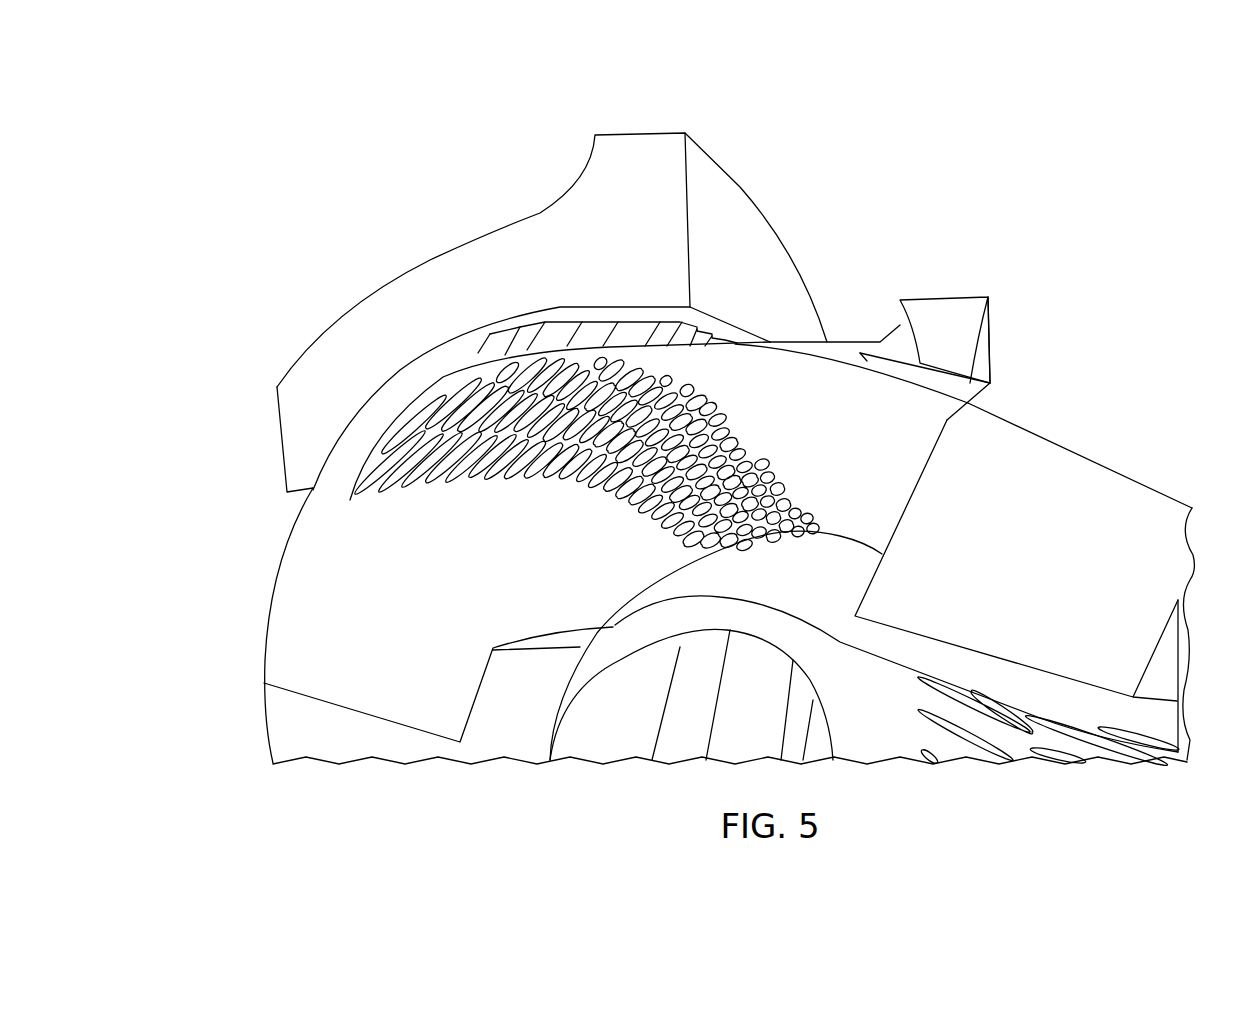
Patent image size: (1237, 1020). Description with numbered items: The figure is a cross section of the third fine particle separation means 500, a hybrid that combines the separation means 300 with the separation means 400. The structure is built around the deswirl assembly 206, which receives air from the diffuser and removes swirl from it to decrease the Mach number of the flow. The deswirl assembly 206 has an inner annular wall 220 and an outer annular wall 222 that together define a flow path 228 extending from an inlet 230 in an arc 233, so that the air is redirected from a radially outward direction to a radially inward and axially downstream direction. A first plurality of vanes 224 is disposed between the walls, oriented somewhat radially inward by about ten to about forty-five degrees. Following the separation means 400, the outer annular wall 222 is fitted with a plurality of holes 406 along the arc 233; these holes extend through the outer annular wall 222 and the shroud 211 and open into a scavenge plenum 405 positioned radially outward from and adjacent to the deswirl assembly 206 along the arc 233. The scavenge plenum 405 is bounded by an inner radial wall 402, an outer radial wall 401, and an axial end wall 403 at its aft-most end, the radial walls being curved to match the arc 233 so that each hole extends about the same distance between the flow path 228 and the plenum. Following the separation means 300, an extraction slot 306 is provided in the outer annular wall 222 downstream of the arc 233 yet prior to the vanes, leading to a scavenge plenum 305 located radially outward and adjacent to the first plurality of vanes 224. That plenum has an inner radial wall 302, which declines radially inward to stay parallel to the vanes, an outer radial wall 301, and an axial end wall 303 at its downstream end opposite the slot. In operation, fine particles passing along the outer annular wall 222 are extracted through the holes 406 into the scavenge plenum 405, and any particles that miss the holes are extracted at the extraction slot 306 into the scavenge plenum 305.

The third fine particle separation means 500 is at (1147, 142).
The separation means 400 is at (553, 116).
The outer radial wall 401 is at (485, 238).
The inner radial wall 402 is at (460, 338).
The axial end wall 403 is at (731, 192).
The scavenge plenum 405 is at (543, 292).
The plurality of holes 406 is at (597, 330).
The deswirl assembly 206 is at (808, 380).
The extraction slot 306 is at (867, 357).
The outer radial wall 301 is at (900, 325).
The scavenge plenum 305 is at (922, 334).
The axial end wall 303 is at (995, 322).
The inner radial wall 302 is at (917, 388).
The separation means 300 is at (948, 228).
The shroud 211 is at (270, 432).
The arc 233 is at (398, 402).
The outer annular wall 222 is at (279, 580).
The flow path 228 is at (545, 589).
The first plurality of vanes 224 is at (1000, 557).
The inner annular wall 220 is at (623, 668).
The inlet 230 is at (427, 762).